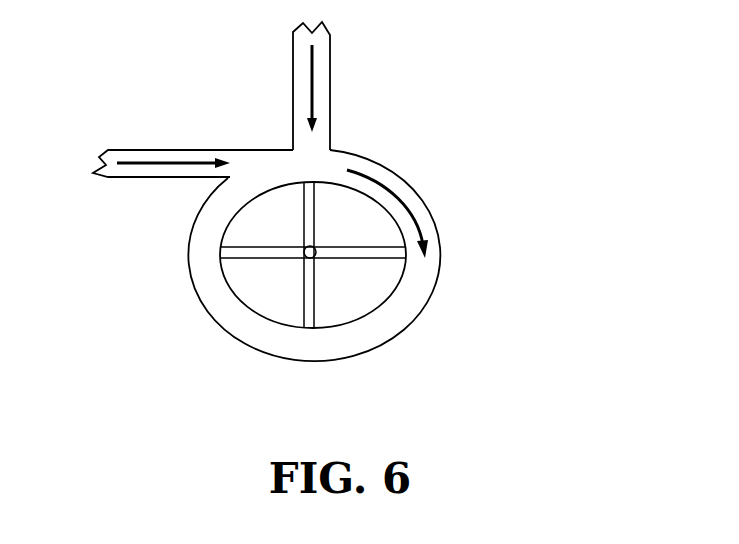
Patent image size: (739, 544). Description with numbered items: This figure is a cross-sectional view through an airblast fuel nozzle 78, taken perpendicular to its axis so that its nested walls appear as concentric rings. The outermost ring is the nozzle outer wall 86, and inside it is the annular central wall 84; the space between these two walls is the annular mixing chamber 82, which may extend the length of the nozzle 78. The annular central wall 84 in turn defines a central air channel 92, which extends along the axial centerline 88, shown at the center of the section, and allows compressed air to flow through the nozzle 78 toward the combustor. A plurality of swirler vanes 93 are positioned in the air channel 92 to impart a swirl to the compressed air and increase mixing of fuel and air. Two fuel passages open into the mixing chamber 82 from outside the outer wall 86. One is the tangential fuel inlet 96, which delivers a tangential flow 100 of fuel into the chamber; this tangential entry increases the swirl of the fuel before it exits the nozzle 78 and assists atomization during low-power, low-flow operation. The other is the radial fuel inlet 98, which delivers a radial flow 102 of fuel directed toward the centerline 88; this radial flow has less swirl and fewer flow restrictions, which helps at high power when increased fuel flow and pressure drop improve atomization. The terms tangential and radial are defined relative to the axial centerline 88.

The fuel nozzle 78 is at (480, 136).
The mixing chamber 82 is at (378, 320).
The annular central wall 84 is at (243, 307).
The nozzle outer wall 86 is at (187, 273).
The axial centerline 88 is at (315, 247).
The air channel 92 is at (287, 300).
The swirler vanes 93 is at (378, 253).
The tangential fuel inlet 96 is at (250, 165).
The radial fuel inlet 98 is at (312, 147).
The tangential flow 100 is at (153, 163).
The radial flow 102 is at (313, 90).